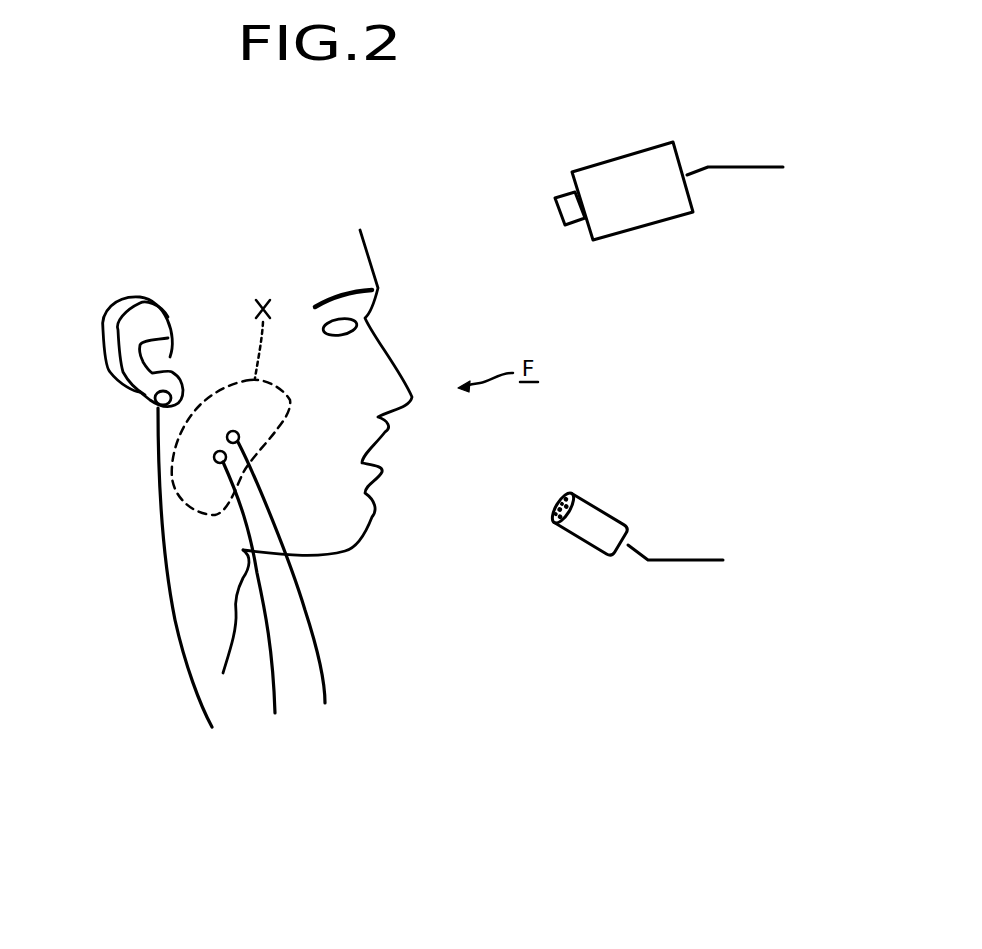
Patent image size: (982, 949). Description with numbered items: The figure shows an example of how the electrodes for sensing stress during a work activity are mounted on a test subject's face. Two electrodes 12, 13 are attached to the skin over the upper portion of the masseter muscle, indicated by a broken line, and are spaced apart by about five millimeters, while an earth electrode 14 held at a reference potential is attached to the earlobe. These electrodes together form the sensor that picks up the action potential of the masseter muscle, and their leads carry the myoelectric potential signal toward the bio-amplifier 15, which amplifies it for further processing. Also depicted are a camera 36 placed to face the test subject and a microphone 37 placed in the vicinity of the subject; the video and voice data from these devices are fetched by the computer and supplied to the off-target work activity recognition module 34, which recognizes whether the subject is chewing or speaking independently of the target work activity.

The electrode 12 is at (240, 436).
The electrode 13 is at (218, 463).
The earth electrode 14 is at (140, 395).
The bio-amplifier 15 is at (218, 742).
The off-target work activity recognition module 34 is at (757, 188).
The camera 36 is at (647, 225).
The microphone 37 is at (610, 512).